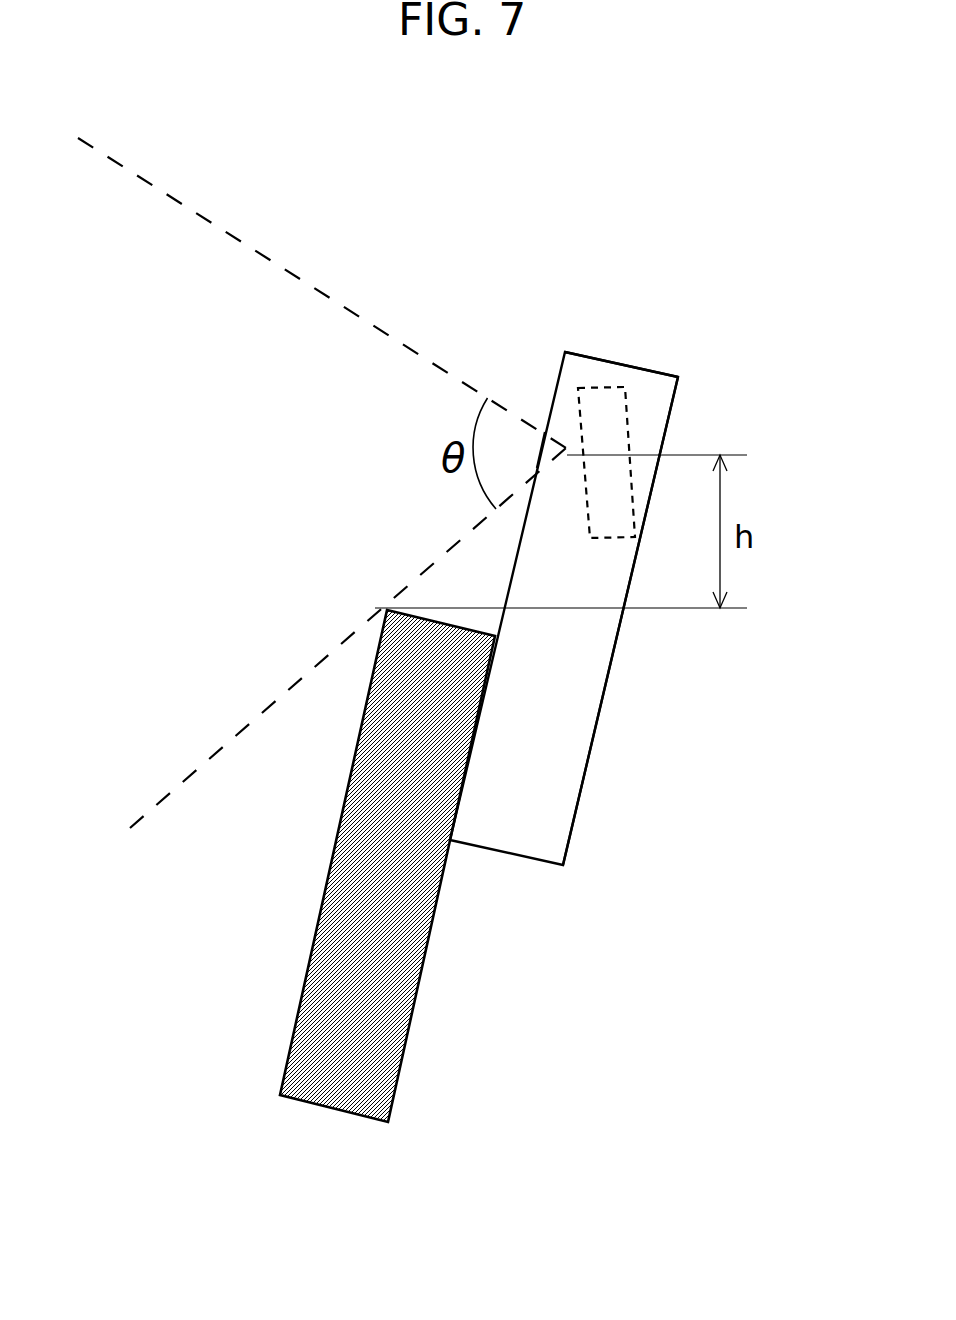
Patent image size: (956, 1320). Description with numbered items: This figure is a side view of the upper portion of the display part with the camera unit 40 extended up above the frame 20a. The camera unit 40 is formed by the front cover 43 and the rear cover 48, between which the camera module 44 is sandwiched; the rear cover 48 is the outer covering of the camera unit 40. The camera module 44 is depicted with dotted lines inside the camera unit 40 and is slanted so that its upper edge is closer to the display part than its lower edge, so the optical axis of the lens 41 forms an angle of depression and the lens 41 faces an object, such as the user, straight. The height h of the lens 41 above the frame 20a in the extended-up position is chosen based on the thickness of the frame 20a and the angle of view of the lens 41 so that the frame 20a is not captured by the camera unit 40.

The camera unit 40 is at (678, 377).
The front cover 43 is at (565, 352).
The lens 41 is at (576, 440).
The camera module 44 is at (630, 417).
The rear cover 48 is at (602, 690).
The frame 20a is at (377, 656).